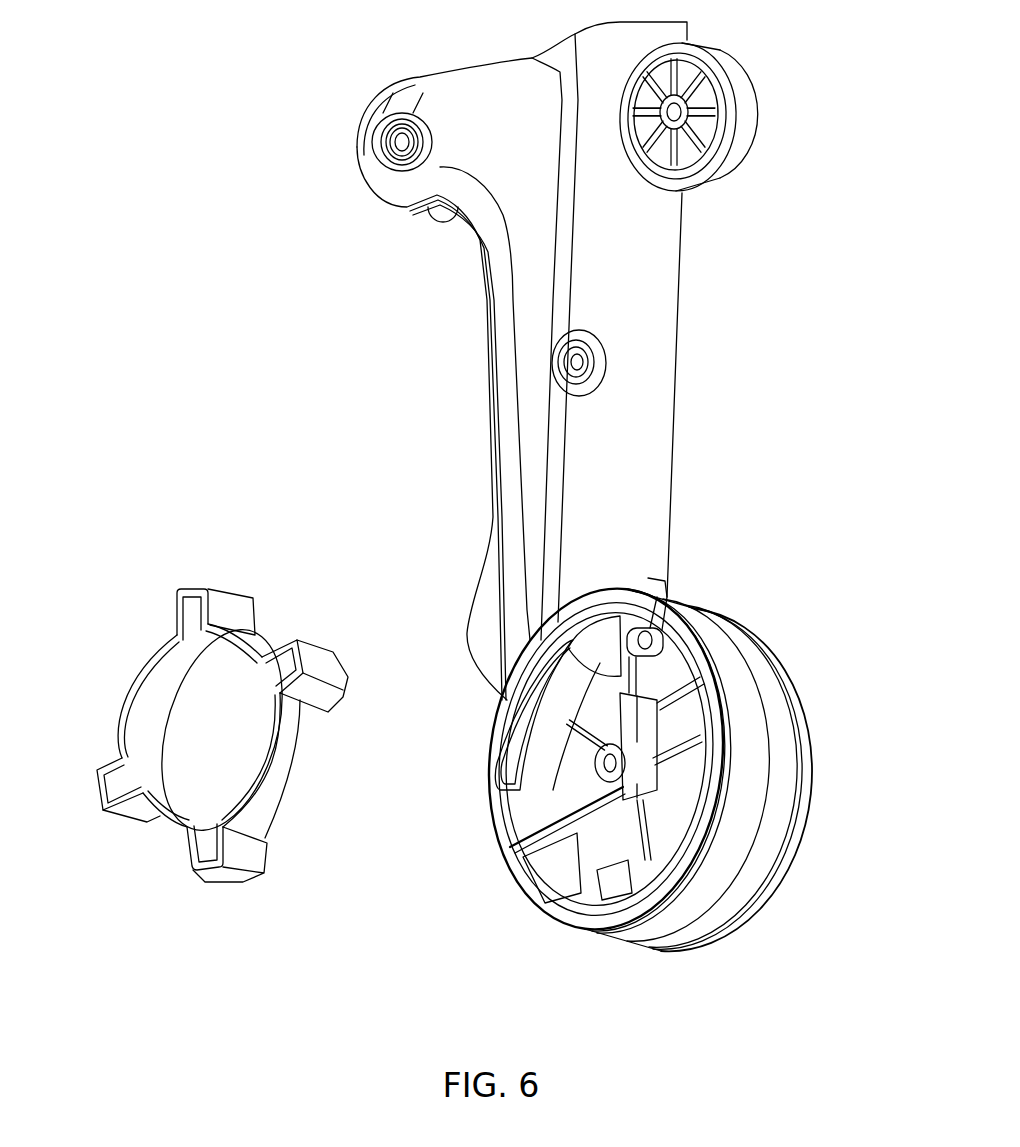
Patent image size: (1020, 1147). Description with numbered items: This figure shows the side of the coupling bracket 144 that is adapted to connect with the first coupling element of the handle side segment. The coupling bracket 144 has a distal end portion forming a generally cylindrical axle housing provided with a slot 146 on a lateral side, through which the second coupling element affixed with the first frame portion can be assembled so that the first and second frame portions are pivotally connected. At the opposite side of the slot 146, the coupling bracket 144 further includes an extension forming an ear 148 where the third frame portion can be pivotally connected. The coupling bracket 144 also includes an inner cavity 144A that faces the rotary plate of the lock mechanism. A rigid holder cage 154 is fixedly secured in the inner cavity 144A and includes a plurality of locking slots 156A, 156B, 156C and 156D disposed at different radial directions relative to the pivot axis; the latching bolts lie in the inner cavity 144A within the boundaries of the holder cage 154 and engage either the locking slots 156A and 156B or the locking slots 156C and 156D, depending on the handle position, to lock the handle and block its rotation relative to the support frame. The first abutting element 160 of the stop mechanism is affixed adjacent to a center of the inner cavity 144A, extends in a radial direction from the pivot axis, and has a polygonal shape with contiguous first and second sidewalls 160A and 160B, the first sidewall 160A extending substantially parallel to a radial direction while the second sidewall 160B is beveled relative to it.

The coupling bracket 144 is at (664, 437).
The inner cavity 144A is at (598, 828).
The slot 146 is at (712, 905).
The ear 148 is at (407, 207).
The holder cage 154 is at (146, 684).
The locking slot 156A is at (195, 620).
The locking slot 156B is at (203, 836).
The locking slot 156C is at (127, 778).
The locking slot 156D is at (280, 669).
The first abutting element 160 is at (737, 705).
The first sidewall 160A is at (718, 732).
The second sidewall 160B is at (600, 693).